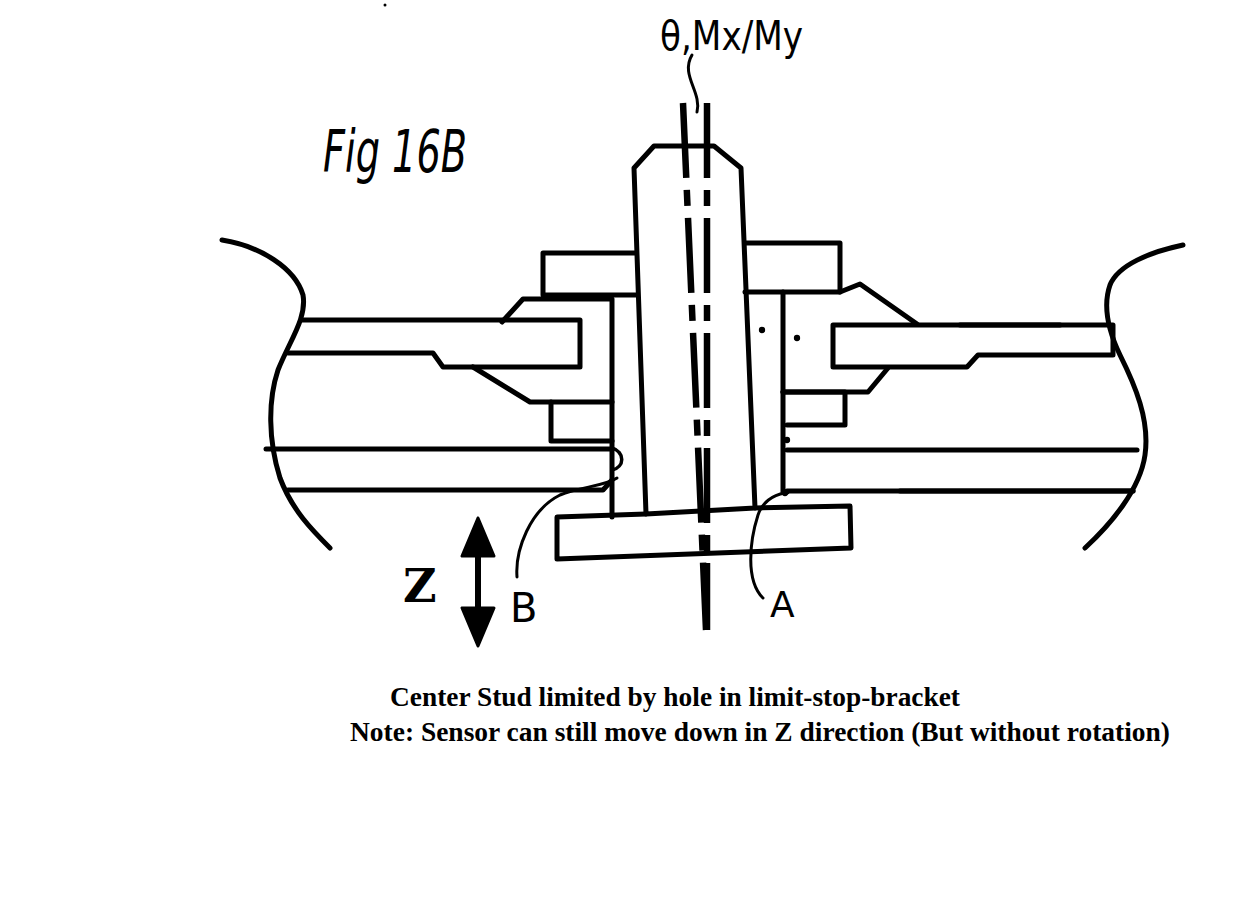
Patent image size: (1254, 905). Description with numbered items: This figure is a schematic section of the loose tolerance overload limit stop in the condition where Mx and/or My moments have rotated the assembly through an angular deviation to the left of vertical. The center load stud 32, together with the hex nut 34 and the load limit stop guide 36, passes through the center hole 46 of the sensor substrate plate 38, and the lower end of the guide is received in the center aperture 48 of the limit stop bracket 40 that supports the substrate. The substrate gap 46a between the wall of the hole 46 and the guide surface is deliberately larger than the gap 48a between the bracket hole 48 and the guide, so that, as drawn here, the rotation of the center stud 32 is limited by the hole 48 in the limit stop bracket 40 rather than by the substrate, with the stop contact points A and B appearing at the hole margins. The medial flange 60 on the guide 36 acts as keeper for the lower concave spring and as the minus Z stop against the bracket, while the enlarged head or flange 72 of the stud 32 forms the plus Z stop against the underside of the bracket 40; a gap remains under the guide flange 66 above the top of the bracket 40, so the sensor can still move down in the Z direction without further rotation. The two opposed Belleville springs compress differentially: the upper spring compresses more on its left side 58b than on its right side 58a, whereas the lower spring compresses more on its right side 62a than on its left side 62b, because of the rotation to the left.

The load stud 32 is at (722, 168).
The hex nut 34 is at (600, 267).
The load limit stop guide 36 is at (762, 330).
The sensor substrate plate 38 is at (1020, 320).
The limit stop bracket 40 is at (980, 470).
The sensor substrate plate center hole 46 is at (857, 287).
The substrate gap 46a is at (797, 338).
The center aperture 48 is at (787, 468).
The gap in the limit stop bracket 48a is at (787, 440).
The right side of upper Belleville spring 58a is at (826, 340).
The left side of upper Belleville spring 58b is at (507, 317).
The medial flange 60 is at (603, 432).
The right side of lower Belleville spring 62a is at (887, 378).
The left side of lower Belleville spring 62b is at (507, 392).
The guide flange 66 is at (318, 333).
The enlarged head/flange 72 is at (623, 554).